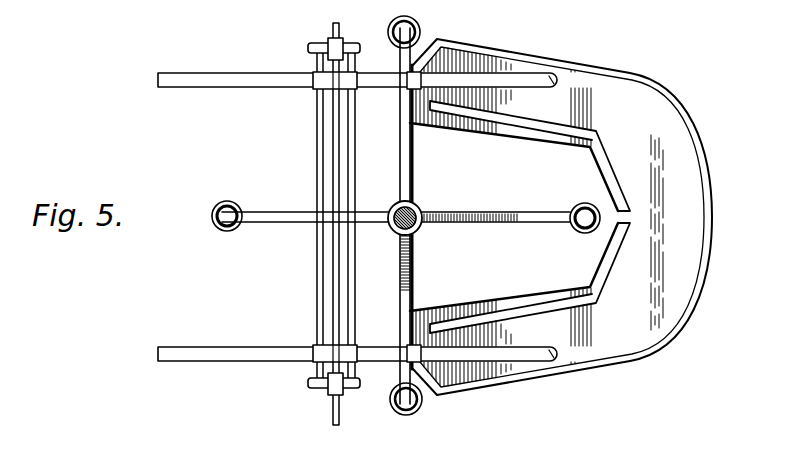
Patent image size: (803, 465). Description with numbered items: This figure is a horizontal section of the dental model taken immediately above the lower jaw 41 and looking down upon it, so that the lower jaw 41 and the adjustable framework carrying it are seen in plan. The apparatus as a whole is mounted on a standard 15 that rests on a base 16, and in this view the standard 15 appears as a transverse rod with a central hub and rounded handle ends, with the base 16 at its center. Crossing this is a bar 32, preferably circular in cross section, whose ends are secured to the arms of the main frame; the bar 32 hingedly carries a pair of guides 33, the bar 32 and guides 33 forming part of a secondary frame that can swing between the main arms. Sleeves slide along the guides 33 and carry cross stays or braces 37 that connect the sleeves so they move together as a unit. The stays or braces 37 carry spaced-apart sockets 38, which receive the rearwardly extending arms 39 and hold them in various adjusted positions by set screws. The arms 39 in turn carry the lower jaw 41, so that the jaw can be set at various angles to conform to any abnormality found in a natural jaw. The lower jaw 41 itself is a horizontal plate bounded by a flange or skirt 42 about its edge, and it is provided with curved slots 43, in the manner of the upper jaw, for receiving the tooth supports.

The standard 15 is at (416, 230).
The base 16 is at (418, 208).
The bar 32 is at (335, 145).
The guides 33 is at (332, 56).
The cross stays or braces 37 is at (350, 163).
The sockets 38 is at (357, 90).
The arms 39 is at (230, 77).
The lower jaw 41 is at (638, 107).
The flange or skirt 42 is at (663, 323).
The curved slots 43 is at (609, 161).